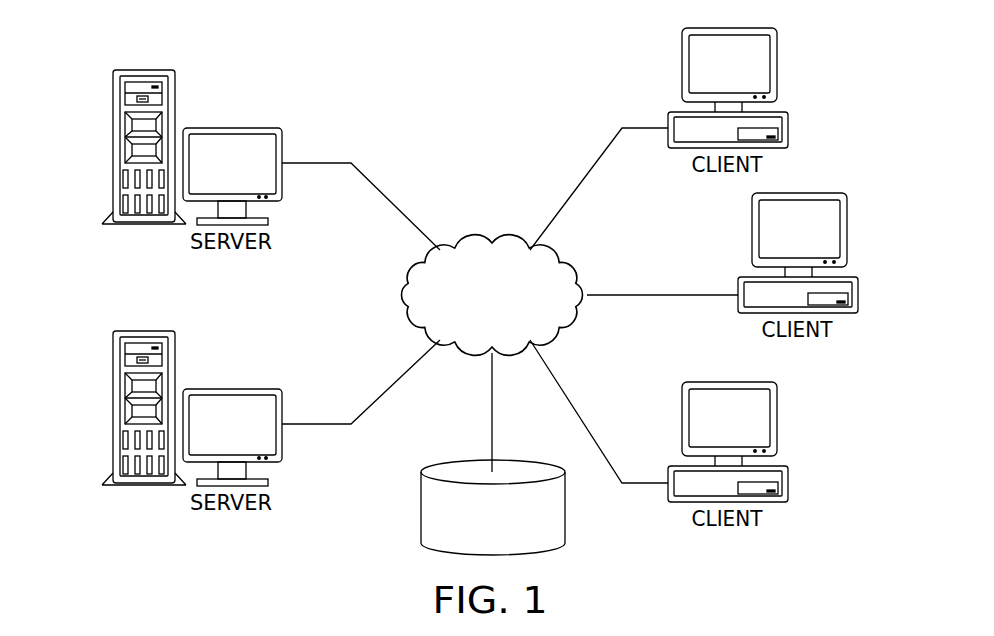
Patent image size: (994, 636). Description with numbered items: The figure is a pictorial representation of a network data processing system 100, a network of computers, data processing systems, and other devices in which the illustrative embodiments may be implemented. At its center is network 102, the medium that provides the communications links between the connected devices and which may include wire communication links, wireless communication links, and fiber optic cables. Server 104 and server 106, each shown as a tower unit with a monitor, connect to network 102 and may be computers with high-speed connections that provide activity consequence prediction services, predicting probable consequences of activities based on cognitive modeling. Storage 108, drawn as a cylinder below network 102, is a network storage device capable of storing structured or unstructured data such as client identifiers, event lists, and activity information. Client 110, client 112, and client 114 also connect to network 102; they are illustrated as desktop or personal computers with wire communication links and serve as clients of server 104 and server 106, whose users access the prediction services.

The network data processing system 100 is at (358, 76).
The network 102 is at (463, 244).
The server 104 is at (115, 148).
The server 106 is at (113, 407).
The storage 108 is at (420, 508).
The client 110 is at (790, 118).
The client 112 is at (862, 300).
The client 114 is at (790, 490).